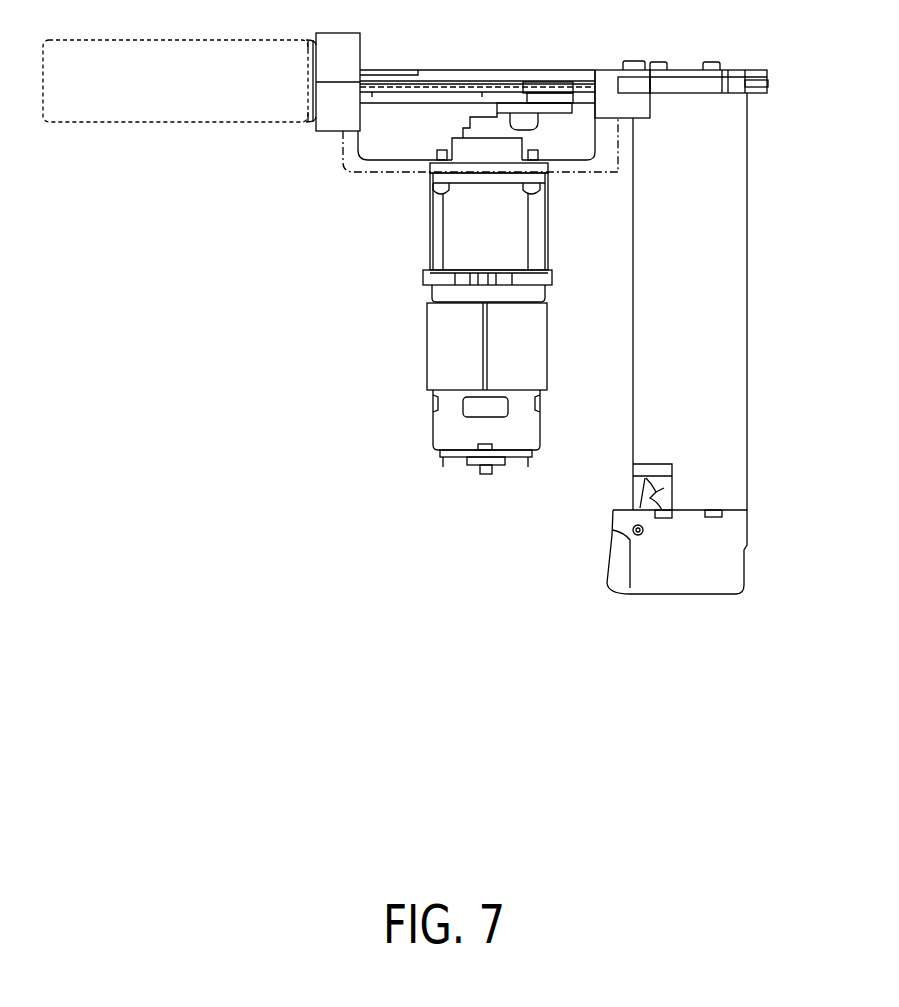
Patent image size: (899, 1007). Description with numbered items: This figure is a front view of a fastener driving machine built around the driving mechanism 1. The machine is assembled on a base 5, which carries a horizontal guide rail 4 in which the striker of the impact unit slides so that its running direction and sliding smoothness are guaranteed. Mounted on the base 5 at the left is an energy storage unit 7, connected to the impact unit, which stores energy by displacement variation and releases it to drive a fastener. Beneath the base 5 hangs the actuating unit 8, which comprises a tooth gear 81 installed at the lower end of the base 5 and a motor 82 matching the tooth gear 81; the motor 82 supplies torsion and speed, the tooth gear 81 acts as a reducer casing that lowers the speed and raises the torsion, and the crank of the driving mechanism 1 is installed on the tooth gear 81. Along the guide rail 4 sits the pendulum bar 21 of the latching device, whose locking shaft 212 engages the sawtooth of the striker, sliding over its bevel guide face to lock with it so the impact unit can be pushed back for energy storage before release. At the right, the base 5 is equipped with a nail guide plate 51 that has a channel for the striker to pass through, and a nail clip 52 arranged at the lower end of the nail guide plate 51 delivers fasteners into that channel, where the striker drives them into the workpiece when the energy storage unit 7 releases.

The driving mechanism 1 is at (549, 127).
The guide rail 4 is at (438, 70).
The base 5 is at (392, 168).
The energy storage unit 7 is at (204, 109).
The actuating unit 8 is at (445, 312).
The pendulum bar 21 is at (548, 82).
The nail guide plate 51 is at (690, 70).
The nail clip 52 is at (738, 148).
The tooth gear 81 is at (430, 238).
The motor 82 is at (465, 388).
The locking shaft 212 is at (533, 72).